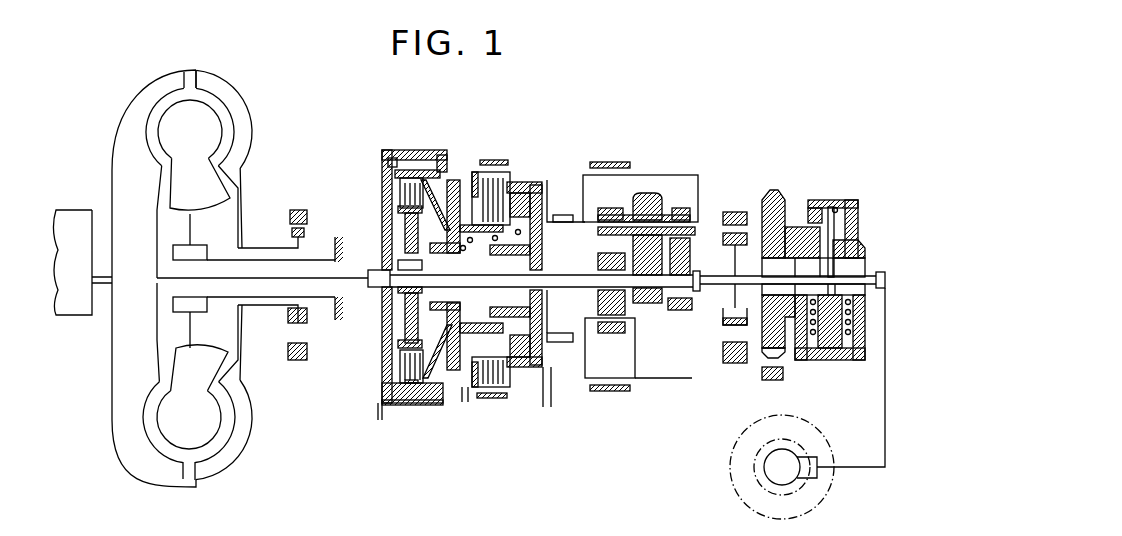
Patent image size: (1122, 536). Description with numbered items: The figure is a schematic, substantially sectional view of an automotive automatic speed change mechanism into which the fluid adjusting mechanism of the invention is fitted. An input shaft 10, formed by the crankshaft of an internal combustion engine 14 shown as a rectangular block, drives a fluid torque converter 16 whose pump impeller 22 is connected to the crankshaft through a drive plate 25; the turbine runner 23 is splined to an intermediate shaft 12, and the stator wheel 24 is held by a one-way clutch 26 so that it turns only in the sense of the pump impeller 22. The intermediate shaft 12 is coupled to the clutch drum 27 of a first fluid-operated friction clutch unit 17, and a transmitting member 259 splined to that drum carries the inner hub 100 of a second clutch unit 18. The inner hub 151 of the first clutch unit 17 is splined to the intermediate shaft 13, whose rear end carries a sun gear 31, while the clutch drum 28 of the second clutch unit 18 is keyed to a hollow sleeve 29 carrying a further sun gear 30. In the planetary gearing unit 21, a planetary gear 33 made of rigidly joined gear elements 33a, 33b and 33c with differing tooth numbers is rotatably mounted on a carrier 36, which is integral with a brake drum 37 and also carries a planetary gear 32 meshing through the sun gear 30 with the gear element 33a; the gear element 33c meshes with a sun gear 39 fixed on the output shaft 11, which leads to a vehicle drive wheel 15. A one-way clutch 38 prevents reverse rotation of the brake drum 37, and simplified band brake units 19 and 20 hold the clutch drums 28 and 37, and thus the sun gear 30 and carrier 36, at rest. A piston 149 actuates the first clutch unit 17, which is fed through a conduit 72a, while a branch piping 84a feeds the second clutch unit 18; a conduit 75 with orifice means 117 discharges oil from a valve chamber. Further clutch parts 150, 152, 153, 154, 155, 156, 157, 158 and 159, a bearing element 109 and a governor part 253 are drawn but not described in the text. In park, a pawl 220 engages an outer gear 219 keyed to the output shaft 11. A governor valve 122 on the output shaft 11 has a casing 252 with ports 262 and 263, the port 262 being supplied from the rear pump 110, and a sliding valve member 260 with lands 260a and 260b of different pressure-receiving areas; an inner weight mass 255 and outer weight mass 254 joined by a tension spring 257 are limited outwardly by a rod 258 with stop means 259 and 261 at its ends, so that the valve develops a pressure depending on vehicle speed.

The input shaft 10 is at (100, 290).
The output shaft 11 is at (715, 275).
The intermediate shaft 12 is at (310, 262).
The intermediate shaft 13 is at (455, 283).
The internal combustion engine 14 is at (70, 212).
The vehicle drive wheel 15 is at (738, 482).
The fluid torque converter 16 is at (227, 92).
The first clutch unit 17 is at (443, 143).
The second clutch unit 18 is at (541, 178).
The first brake unit 19 is at (508, 155).
The second brake unit 20 is at (614, 162).
The planetary gearing unit 21 is at (658, 371).
The pump impeller 22 is at (237, 120).
The turbine runner 23 is at (143, 118).
The stator wheel 24 is at (212, 187).
The drive plate 25 is at (110, 160).
The one-way clutch 26 is at (203, 255).
The clutch drum 27 is at (400, 150).
The clutch drum 28 is at (452, 185).
The hollow sleeve 29 is at (545, 292).
The sun gear 30 is at (612, 333).
The sun gear 31 is at (645, 303).
The planetary gear 32 is at (606, 335).
The planetary gear 33 is at (669, 185).
The gear element 33a is at (602, 208).
The gear element 33b is at (661, 192).
The gear element 33c is at (686, 208).
The carrier 36 is at (590, 174).
The brake drum 37 is at (647, 193).
The one-way clutch 38 is at (563, 215).
The sun gear 39 is at (677, 310).
The conduit 72a is at (464, 388).
The conduit 75 is at (377, 420).
The branch piping 84a is at (552, 410).
The inner hub 100 is at (452, 175).
The bearing 109 is at (281, 199).
The rear pump 110 is at (728, 212).
The orifice means 117 is at (372, 416).
The governor valve 122 is at (859, 178).
The piston 149 is at (447, 387).
The clutch plates 150 is at (425, 408).
The inner hub 151 is at (405, 240).
The clutch disc 152 is at (405, 355).
The clutch plates 153 is at (400, 375).
The lever 154 is at (423, 150).
The clutch plates 155 is at (541, 228).
The plate 156 is at (540, 262).
The plate 157 is at (480, 398).
The clutch plates 158 is at (520, 398).
The spring 159 is at (495, 250).
The outer gear 219 is at (781, 358).
The pawl 220 is at (768, 381).
The casing 252 is at (866, 321).
The cylinder bottom 253 is at (866, 345).
The outer weight mass 254 is at (866, 301).
The inner weight mass 255 is at (843, 345).
The tension spring 257 is at (820, 348).
The rod 258 is at (842, 270).
The transmitting member 259 is at (385, 170).
The valve member 260 is at (850, 205).
The land 260a is at (859, 215).
The land 260b is at (866, 248).
The stop means 261 is at (405, 405).
The port 262 is at (385, 395).
The second port 263 is at (805, 227).